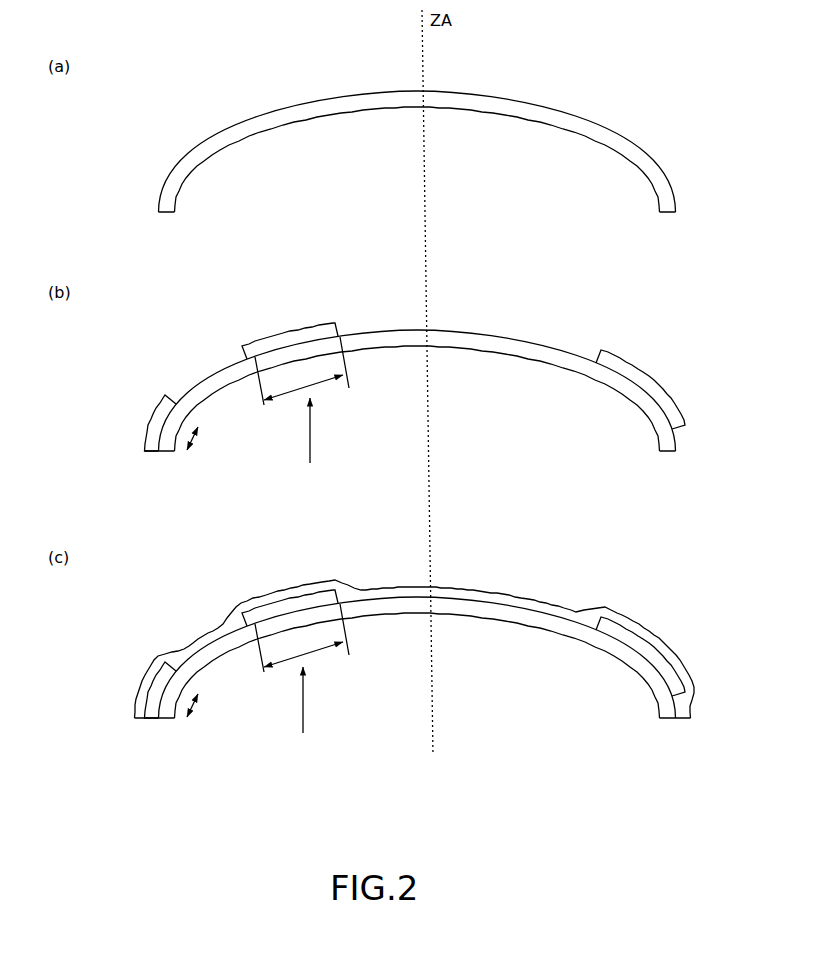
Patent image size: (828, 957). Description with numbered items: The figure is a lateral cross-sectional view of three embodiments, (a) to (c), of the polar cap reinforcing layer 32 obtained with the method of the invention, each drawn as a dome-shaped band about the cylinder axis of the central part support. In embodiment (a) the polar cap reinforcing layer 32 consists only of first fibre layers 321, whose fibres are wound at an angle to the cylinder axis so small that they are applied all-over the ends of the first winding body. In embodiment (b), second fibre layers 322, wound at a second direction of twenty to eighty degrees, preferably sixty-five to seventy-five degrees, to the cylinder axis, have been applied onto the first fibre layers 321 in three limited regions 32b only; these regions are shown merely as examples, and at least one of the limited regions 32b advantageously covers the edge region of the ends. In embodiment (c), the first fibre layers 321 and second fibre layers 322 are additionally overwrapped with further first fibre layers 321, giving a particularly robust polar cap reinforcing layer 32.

The polar cap reinforcing layer 32 is at (406, 373).
The first fibre layers 321 is at (342, 102).
The second fibre layers 322 is at (404, 490).
The limited regions 32b is at (268, 550).